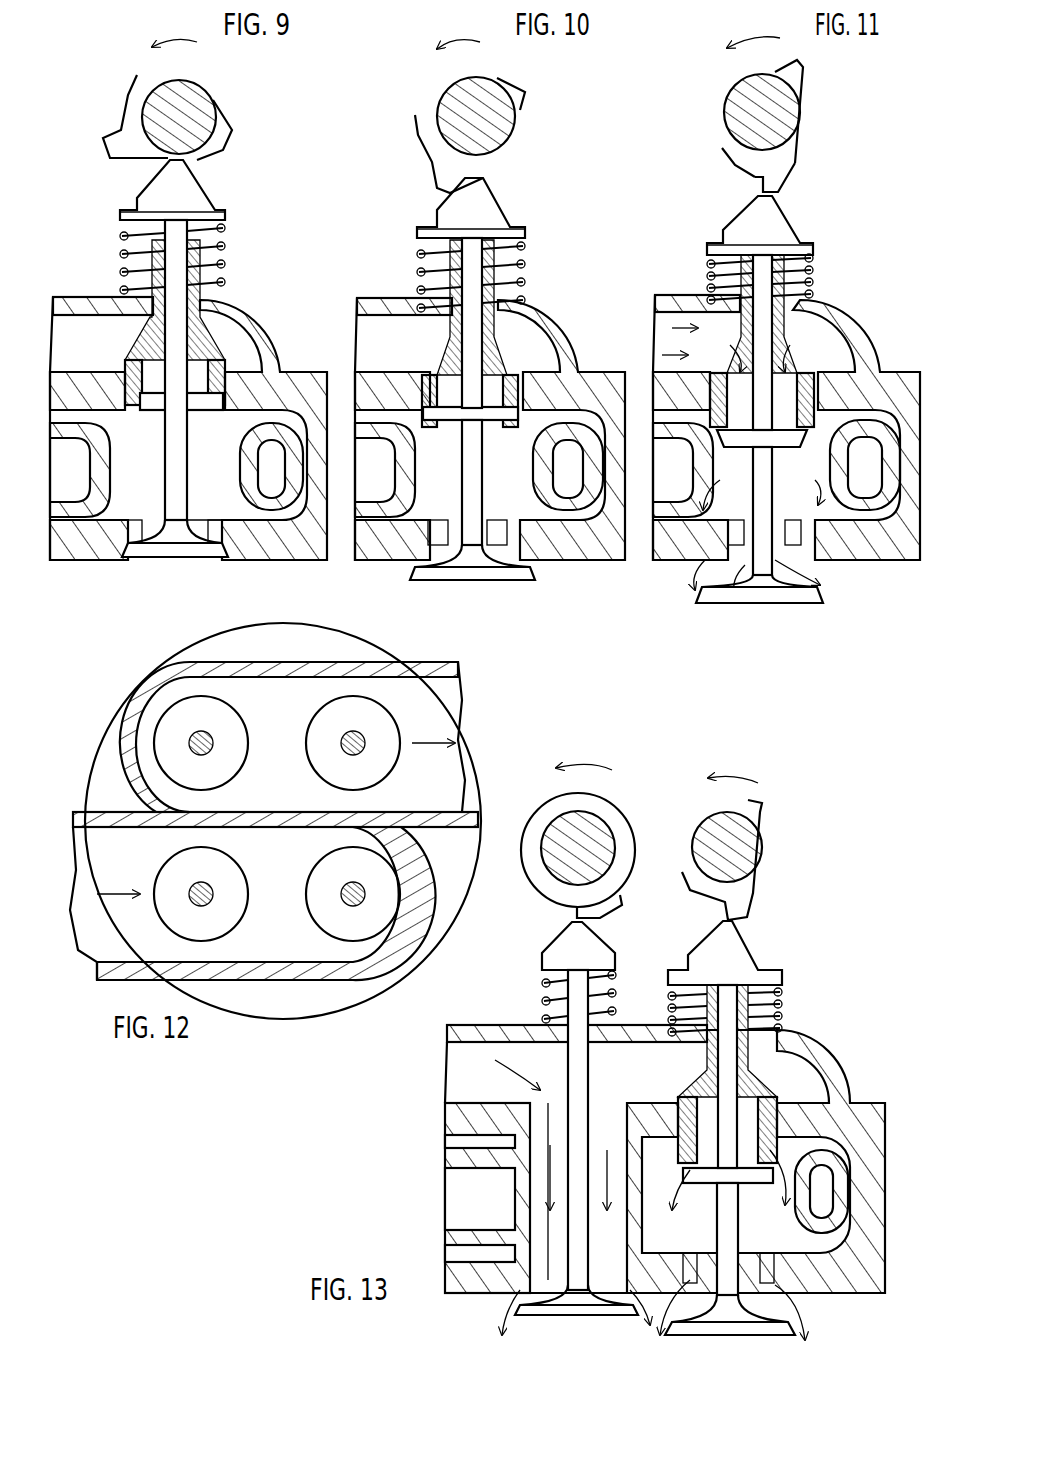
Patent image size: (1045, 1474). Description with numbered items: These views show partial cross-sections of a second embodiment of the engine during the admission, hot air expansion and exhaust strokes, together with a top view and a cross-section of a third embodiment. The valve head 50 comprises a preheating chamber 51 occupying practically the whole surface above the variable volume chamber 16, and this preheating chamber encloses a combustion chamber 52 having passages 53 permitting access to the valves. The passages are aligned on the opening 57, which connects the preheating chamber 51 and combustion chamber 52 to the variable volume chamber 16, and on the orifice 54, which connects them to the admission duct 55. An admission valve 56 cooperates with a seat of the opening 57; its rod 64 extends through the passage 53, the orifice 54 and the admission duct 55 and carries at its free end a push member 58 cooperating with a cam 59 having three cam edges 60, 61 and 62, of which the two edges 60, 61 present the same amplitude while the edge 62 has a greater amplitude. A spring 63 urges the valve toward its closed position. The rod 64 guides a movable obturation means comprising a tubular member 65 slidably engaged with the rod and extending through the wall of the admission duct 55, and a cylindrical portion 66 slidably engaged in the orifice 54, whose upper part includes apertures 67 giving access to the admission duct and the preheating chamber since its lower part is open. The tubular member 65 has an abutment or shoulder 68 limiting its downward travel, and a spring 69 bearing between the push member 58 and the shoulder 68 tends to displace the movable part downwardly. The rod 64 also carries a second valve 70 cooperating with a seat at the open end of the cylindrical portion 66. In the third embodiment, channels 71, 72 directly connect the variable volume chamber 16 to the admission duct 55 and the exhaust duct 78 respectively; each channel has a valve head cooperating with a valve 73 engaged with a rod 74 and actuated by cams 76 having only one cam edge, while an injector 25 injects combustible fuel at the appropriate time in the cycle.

In FIG. 9, the variable volume chamber 16 is at (203, 597).
In FIG. 10, the variable volume chamber 16 is at (599, 592).
In FIG. 11, the variable volume chamber 16 is at (879, 589).
In FIG. 13, the variable volume chamber 16 is at (635, 1347).
In FIG. 13, the injector 25 is at (600, 835).
In FIG. 9, the valve head 50 is at (305, 540).
In FIG. 10, the valve head 50 is at (490, 429).
In FIG. 11, the valve head 50 is at (895, 380).
In FIG. 12, the valve head 50 is at (338, 650).
In FIG. 13, the valve head 50 is at (860, 1110).
In FIG. 9, the preheating chamber 51 is at (262, 522).
In FIG. 10, the preheating chamber 51 is at (582, 522).
In FIG. 11, the preheating chamber 51 is at (890, 525).
In FIG. 13, the preheating chamber 51 is at (862, 1200).
In FIG. 9, the combustion chamber 52 is at (82, 485).
In FIG. 10, the combustion chamber 52 is at (565, 470).
In FIG. 11, the combustion chamber 52 is at (867, 475).
In FIG. 13, the combustion chamber 52 is at (835, 1199).
In FIG. 9, the passages 53 is at (223, 459).
In FIG. 10, the passages 53 is at (520, 462).
In FIG. 11, the passages 53 is at (803, 479).
In FIG. 11, the orifice 54 is at (785, 380).
In FIG. 12, the orifice 54 is at (363, 780).
In FIG. 13, the orifice 54 is at (775, 1105).
In FIG. 9, the admission duct 55 is at (82, 352).
In FIG. 10, the admission duct 55 is at (400, 352).
In FIG. 11, the admission duct 55 is at (693, 352).
In FIG. 12, the admission duct 55 is at (280, 934).
In FIG. 13, the admission duct 55 is at (475, 1077).
In FIG. 9, the admission valve 56 is at (172, 557).
In FIG. 10, the admission valve 56 is at (490, 580).
In FIG. 11, the admission valve 56 is at (750, 603).
In FIG. 13, the admission valve 56 is at (740, 1335).
In FIG. 9, the opening 57 is at (140, 545).
In FIG. 10, the opening 57 is at (435, 548).
In FIG. 11, the opening 57 is at (705, 545).
In FIG. 13, the opening 57 is at (770, 1265).
In FIG. 9, the push member 58 is at (185, 195).
In FIG. 10, the push member 58 is at (480, 205).
In FIG. 11, the push member 58 is at (780, 228).
In FIG. 13, the push member 58 is at (735, 958).
In FIG. 9, the cam 59 is at (204, 96).
In FIG. 10, the cam 59 is at (500, 127).
In FIG. 11, the cam 59 is at (785, 118).
In FIG. 13, the cam 59 is at (745, 856).
In FIG. 11, the cam edge 60 is at (800, 72).
In FIG. 11, the cam edge 61 is at (725, 160).
In FIG. 11, the cam edge 62 is at (782, 190).
In FIG. 9, the spring 63 is at (225, 258).
In FIG. 10, the spring 63 is at (500, 262).
In FIG. 11, the spring 63 is at (812, 268).
In FIG. 11, the rod 64 is at (800, 570).
In FIG. 13, the rod 64 is at (727, 1205).
In FIG. 9, the tubular member 65 is at (110, 305).
In FIG. 10, the tubular member 65 is at (505, 302).
In FIG. 11, the tubular member 65 is at (705, 300).
In FIG. 9, the cylindrical portion 66 is at (222, 378).
In FIG. 10, the cylindrical portion 66 is at (430, 378).
In FIG. 11, the cylindrical portion 66 is at (810, 390).
In FIG. 13, the cylindrical portion 66 is at (727, 1130).
In FIG. 10, the apertures 67 is at (498, 358).
In FIG. 11, the apertures 67 is at (790, 360).
In FIG. 9, the abutment or shoulder 68 is at (225, 290).
In FIG. 10, the abutment or shoulder 68 is at (420, 285).
In FIG. 13, the abutment or shoulder 68 is at (775, 1030).
In FIG. 9, the spring 69 is at (215, 215).
In FIG. 10, the spring 69 is at (440, 235).
In FIG. 11, the spring 69 is at (725, 240).
In FIG. 9, the second valve 70 is at (165, 412).
In FIG. 10, the second valve 70 is at (462, 422).
In FIG. 11, the second valve 70 is at (745, 448).
In FIG. 13, the second valve 70 is at (720, 1185).
In FIG. 12, the channel 71 is at (211, 930).
In FIG. 13, the channel 71 is at (617, 1237).
In FIG. 12, the channel 72 is at (211, 780).
In FIG. 13, the valve 73 is at (575, 1312).
In FIG. 13, the rod 74 is at (575, 1075).
In FIG. 13, the cams 76 is at (600, 918).
In FIG. 12, the exhaust duct 78 is at (275, 787).